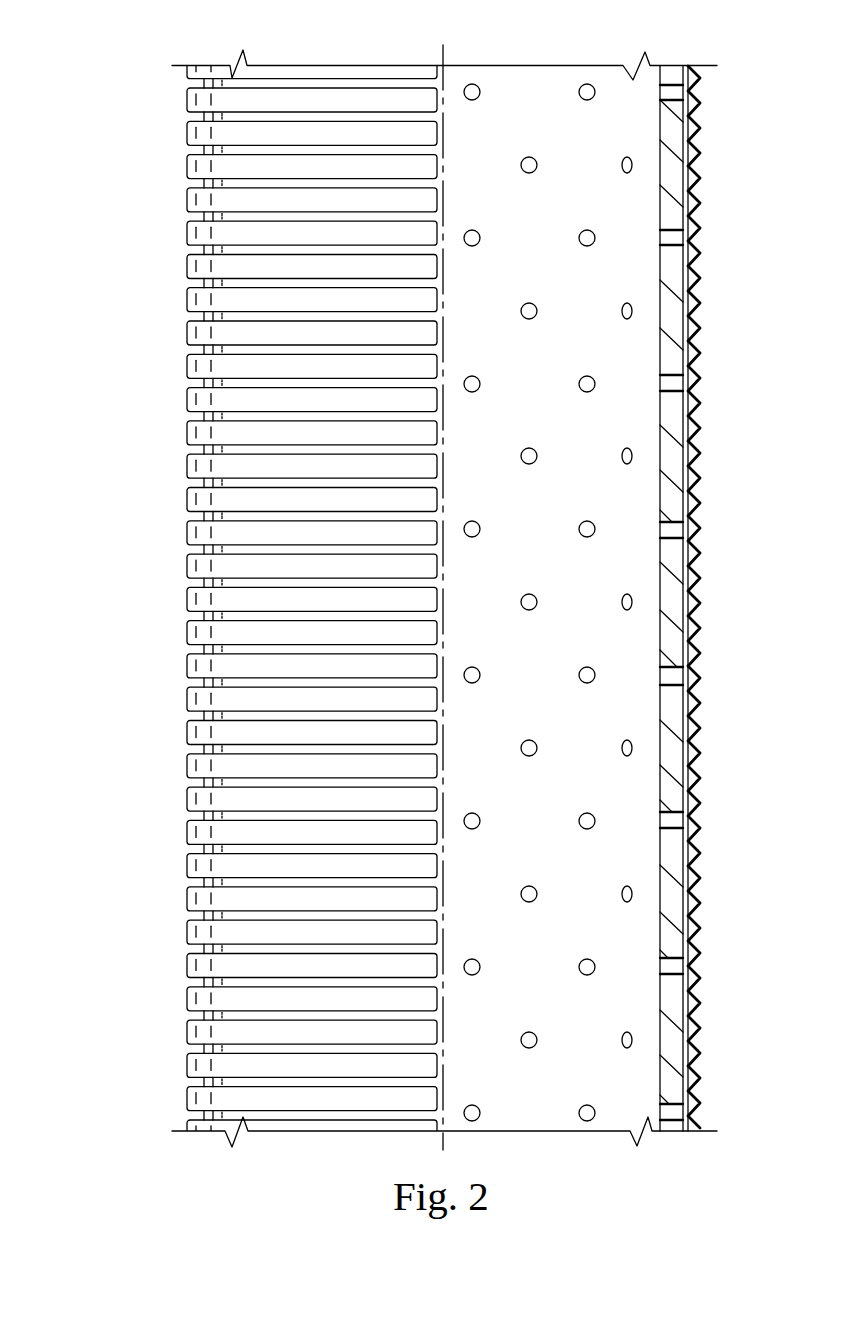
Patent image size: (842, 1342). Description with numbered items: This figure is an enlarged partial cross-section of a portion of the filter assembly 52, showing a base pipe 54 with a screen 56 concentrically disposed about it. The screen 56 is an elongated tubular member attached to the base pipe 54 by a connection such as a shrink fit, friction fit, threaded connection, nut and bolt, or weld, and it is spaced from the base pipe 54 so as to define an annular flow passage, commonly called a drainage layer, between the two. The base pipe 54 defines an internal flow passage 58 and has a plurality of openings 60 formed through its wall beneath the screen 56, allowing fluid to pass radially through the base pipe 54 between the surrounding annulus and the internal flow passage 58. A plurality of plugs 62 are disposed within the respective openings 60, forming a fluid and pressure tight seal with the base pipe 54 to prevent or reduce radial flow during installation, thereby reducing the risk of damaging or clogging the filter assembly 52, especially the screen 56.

The filter assembly 52 is at (86, 295).
The base pipe 54 is at (672, 284).
The screen 56 is at (698, 430).
The internal flow passage 58 is at (538, 96).
The openings 60 is at (589, 86).
The plugs 62 is at (621, 164).